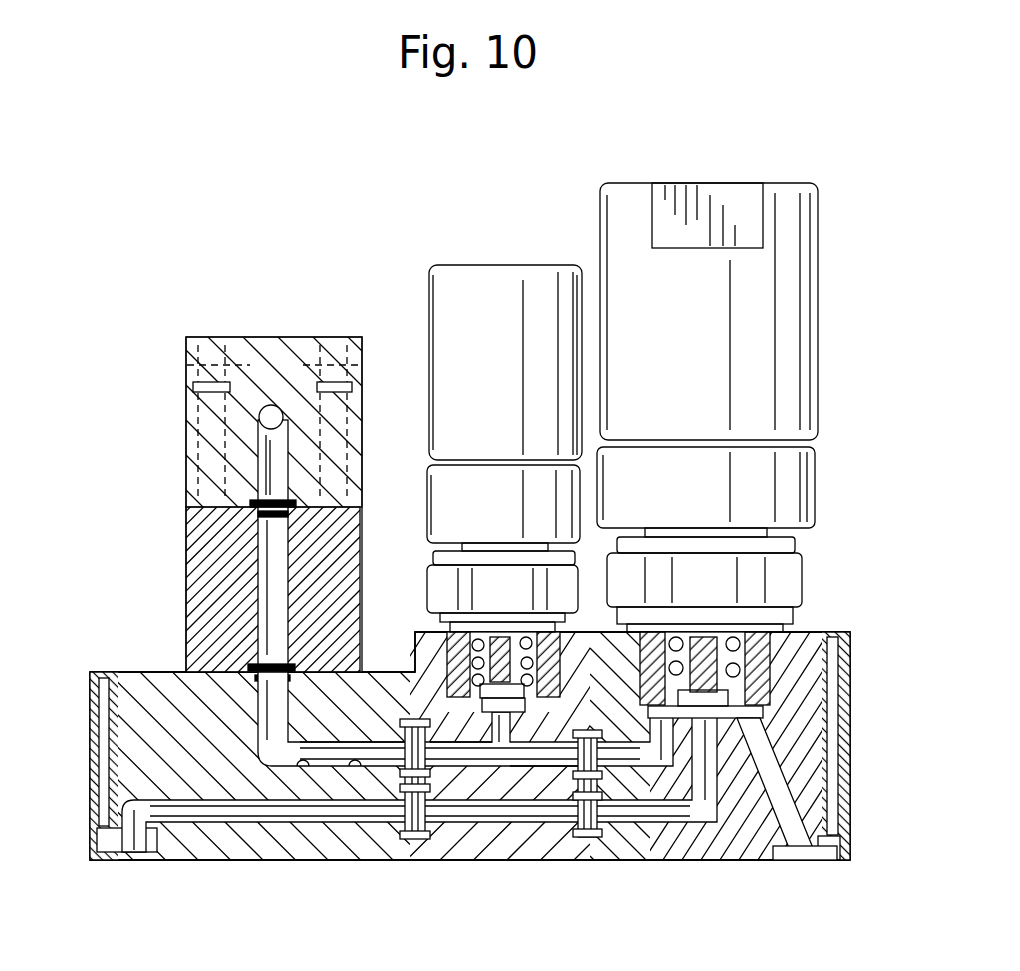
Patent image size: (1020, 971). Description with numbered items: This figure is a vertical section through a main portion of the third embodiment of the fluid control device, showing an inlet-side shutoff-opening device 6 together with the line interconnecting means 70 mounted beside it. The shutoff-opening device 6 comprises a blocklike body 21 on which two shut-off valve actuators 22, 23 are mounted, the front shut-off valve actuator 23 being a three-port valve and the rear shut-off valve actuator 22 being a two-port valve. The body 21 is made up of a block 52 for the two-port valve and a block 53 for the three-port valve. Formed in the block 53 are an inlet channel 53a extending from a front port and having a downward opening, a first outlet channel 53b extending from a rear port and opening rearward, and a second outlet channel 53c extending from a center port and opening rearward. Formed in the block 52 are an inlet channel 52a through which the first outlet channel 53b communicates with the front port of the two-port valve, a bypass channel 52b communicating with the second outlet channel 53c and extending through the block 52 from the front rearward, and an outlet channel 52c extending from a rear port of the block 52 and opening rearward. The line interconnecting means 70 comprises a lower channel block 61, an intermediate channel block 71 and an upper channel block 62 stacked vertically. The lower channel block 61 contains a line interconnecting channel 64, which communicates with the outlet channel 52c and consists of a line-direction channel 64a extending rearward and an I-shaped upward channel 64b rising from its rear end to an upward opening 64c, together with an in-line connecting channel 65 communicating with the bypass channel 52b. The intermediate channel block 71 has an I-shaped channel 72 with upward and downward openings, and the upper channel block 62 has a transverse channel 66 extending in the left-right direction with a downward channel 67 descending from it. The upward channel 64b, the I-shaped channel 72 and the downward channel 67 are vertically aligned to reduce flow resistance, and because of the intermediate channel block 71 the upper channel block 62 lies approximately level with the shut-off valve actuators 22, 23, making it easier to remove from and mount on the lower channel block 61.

The inlet-side shutoff-opening device 6 is at (818, 413).
The body 21 is at (673, 862).
The rear shut-off valve actuator 22 is at (440, 292).
The front shut-off valve actuator 23 is at (782, 308).
The block for the 2-port valve 52 is at (490, 862).
The inlet channel 52a is at (536, 782).
The bypass channel 52b is at (452, 832).
The outlet channel 52c is at (440, 745).
The block for the 3-port valve 53 is at (808, 848).
The inlet channel 53a is at (768, 786).
The first outlet channel 53b is at (610, 772).
The second outlet channel 53c is at (728, 832).
The lower channel block 61 is at (135, 693).
The upper channel block 62 is at (257, 350).
The line interconnecting channel 64 is at (302, 768).
The line-direction channel 64a is at (356, 770).
The upward channel 64b is at (252, 730).
The upward opening 64c is at (258, 690).
The in-line connecting channel 65 is at (204, 835).
The transverse channel 66 is at (276, 410).
The downward channel 67 is at (262, 455).
The line interconnecting means 70 is at (160, 383).
The intermediate channel block 71 is at (205, 579).
The I-shaped channel 72 is at (262, 538).